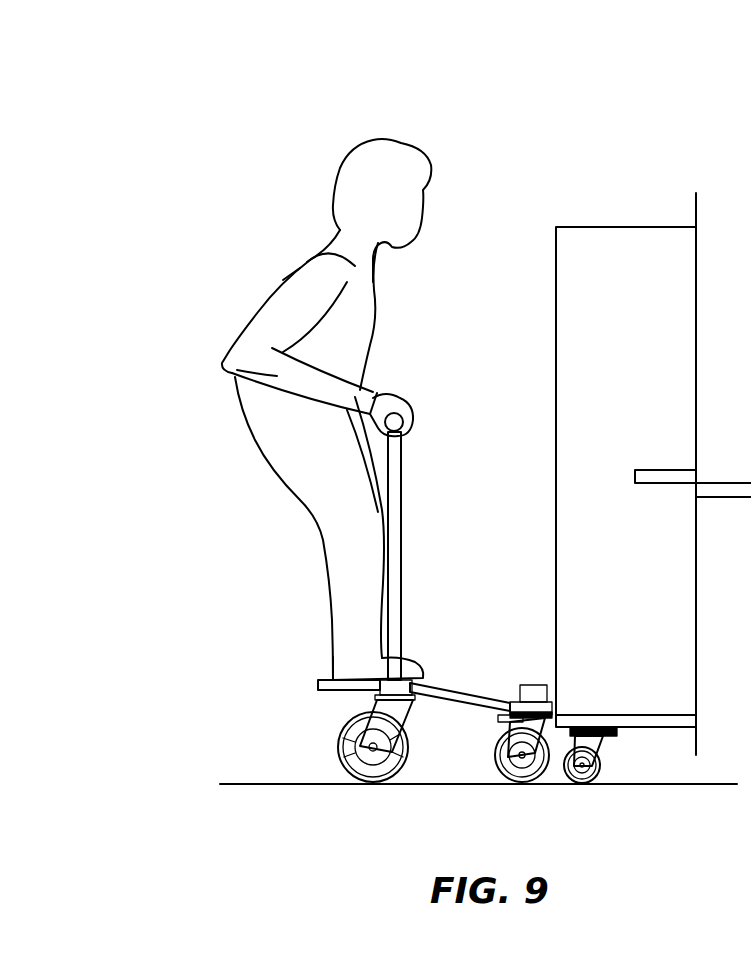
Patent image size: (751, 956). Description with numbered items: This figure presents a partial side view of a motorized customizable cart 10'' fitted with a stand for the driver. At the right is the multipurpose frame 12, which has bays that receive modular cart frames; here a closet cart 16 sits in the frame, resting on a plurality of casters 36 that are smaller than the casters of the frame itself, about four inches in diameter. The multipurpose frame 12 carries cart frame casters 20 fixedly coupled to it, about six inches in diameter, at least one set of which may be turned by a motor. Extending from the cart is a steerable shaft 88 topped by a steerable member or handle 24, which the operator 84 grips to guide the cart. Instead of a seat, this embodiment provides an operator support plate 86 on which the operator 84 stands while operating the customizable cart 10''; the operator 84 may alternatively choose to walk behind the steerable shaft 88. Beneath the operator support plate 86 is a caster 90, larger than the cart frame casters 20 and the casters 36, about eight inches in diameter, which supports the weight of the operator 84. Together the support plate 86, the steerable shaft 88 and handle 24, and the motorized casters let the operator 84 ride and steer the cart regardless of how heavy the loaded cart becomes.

The customizable cart 10'' is at (390, 385).
The multipurpose frame 12 is at (660, 720).
The closet cart 16 is at (598, 248).
The cart frame caster 20 is at (521, 757).
The handle 24 is at (397, 412).
The caster 36 is at (585, 768).
The operator 84 is at (230, 348).
The operator support plate 86 is at (318, 680).
The steerable shaft 88 is at (400, 548).
The caster 90 is at (375, 750).